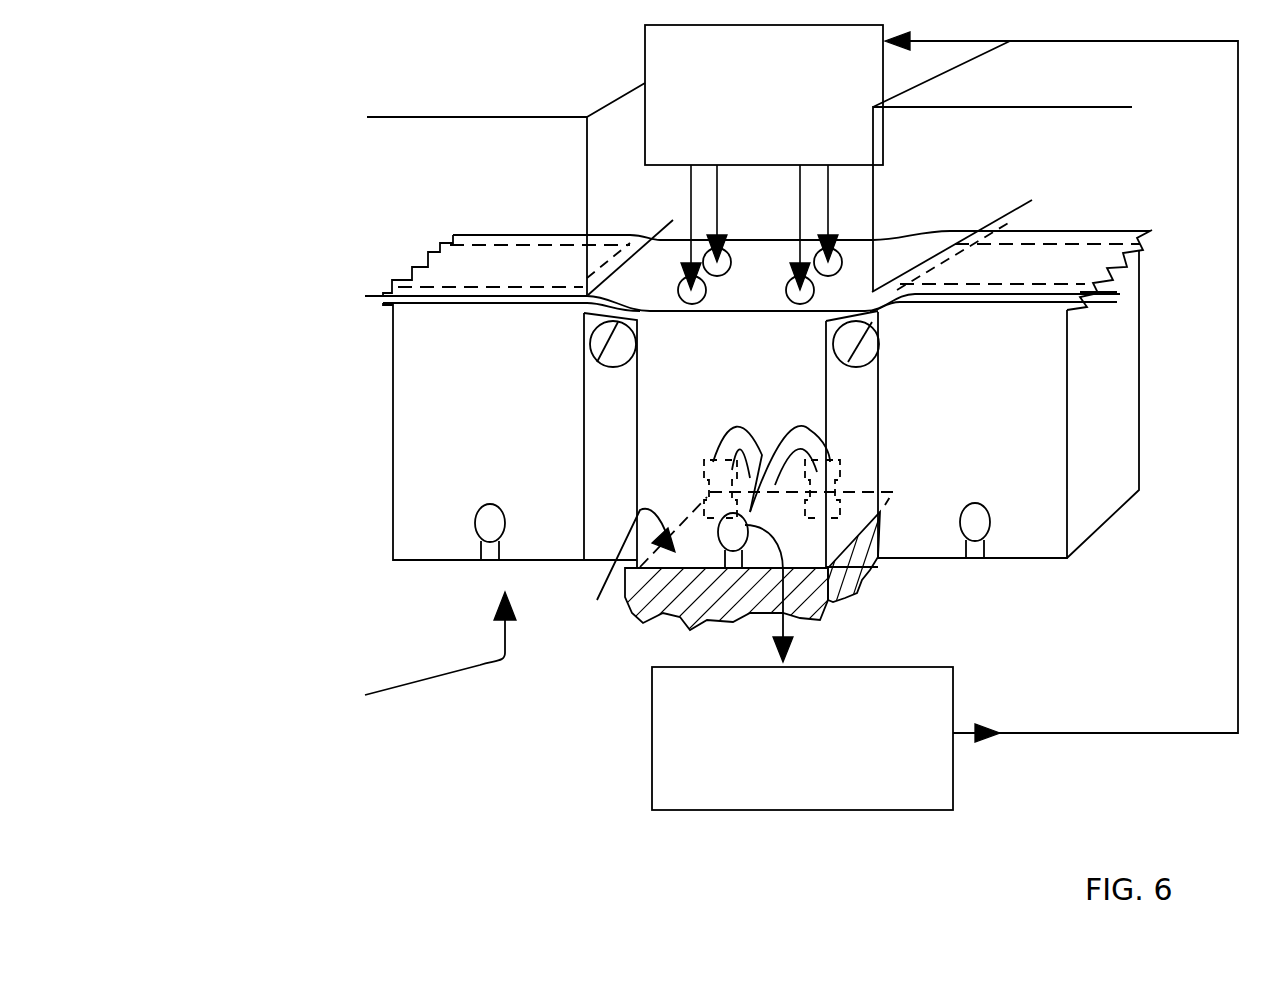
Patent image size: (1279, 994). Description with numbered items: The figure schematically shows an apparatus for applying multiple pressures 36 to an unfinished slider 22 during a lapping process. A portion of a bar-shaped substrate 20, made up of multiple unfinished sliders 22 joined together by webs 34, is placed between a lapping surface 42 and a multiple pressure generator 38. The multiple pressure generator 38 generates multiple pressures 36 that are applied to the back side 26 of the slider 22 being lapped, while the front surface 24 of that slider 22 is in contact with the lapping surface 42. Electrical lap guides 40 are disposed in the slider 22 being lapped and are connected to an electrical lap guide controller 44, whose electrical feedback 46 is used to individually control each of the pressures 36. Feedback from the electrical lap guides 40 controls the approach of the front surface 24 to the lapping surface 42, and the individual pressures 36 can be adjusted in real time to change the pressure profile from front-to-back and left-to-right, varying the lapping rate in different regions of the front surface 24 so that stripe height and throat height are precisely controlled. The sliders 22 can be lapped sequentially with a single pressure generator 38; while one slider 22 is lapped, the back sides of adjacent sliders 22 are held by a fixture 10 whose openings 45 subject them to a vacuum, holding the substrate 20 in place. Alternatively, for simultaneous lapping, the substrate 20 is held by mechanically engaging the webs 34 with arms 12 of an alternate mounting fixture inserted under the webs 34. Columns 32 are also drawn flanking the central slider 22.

The fixture 10 is at (428, 117).
The arms 12 is at (613, 367).
The substrate 20 is at (290, 266).
The unfinished slider 22 is at (501, 444).
The front surface 24 is at (562, 610).
The back side 26 is at (501, 286).
The column 32 is at (622, 469).
The webs 34 is at (591, 361).
The multiple pressures 36 is at (717, 212).
The multiple pressure generator 38 is at (766, 119).
The electrical lap guides 40 is at (708, 487).
The lapping surface 42 is at (682, 573).
The electrical lap guide controller 44 is at (795, 744).
The openings 45 is at (603, 270).
The electrical feedback 46 is at (1055, 733).